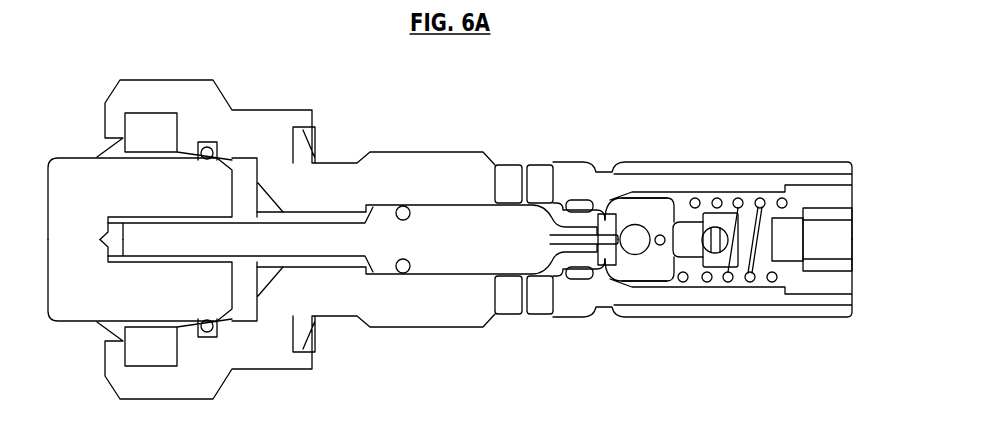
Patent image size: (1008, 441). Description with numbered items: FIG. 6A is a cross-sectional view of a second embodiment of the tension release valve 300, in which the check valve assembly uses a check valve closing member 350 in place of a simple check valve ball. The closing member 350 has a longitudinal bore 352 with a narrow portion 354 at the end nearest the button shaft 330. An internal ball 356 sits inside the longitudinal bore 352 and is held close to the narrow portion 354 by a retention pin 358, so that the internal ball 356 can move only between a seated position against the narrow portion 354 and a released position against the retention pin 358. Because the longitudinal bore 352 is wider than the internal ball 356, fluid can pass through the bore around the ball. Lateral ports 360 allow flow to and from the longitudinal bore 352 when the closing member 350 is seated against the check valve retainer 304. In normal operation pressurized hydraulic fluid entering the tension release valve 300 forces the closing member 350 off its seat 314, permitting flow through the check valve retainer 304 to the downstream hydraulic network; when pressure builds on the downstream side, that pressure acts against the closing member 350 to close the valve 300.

The tension release valve 300 is at (770, 118).
The check valve retainer 304 is at (793, 227).
The seat 314 is at (606, 192).
The button shaft 330 is at (424, 236).
The check valve closing member 350 is at (657, 208).
The longitudinal bore 352 is at (688, 245).
The narrow portion 354 is at (612, 258).
The internal ball 356 is at (634, 248).
The retention pin 358 is at (658, 250).
The lateral ports 360 is at (688, 212).